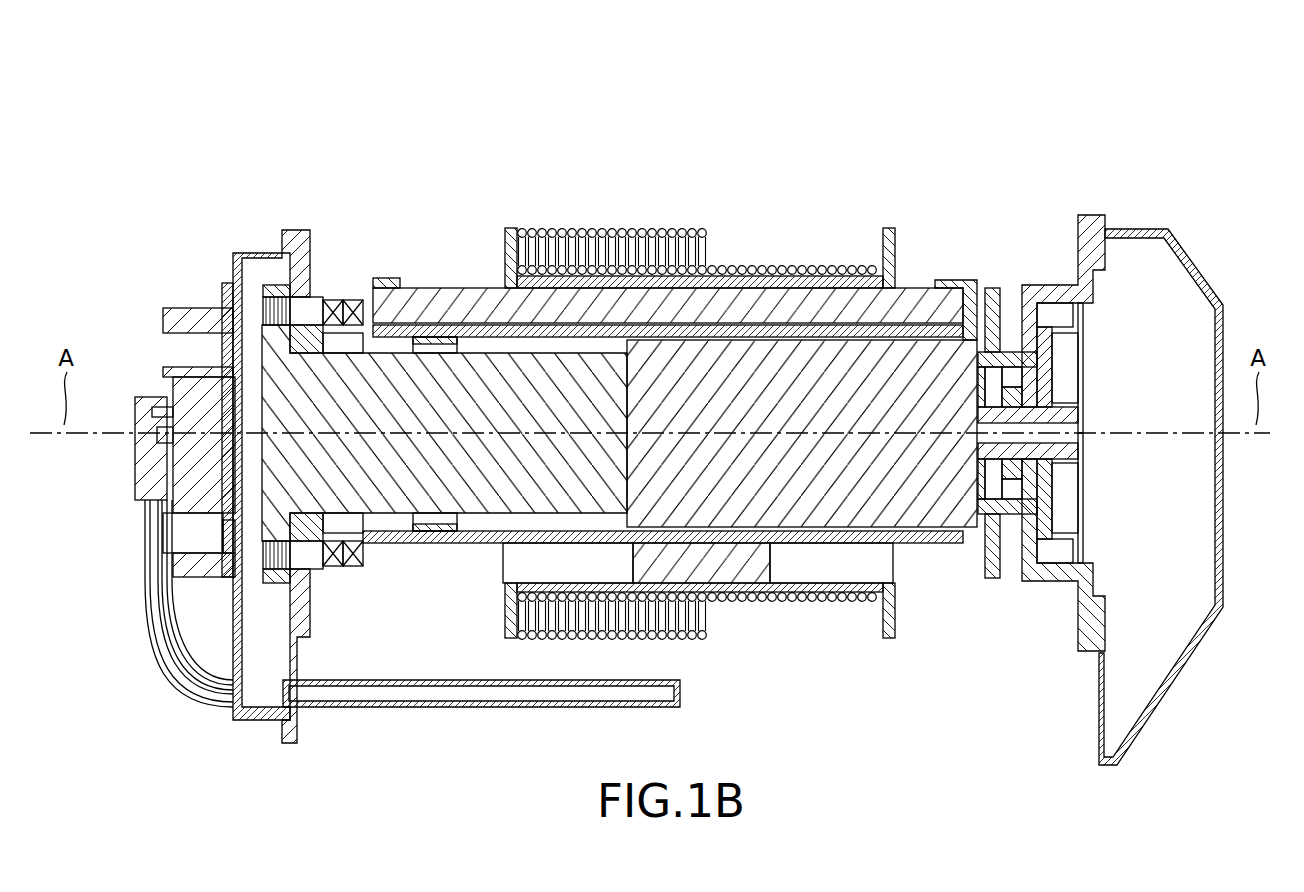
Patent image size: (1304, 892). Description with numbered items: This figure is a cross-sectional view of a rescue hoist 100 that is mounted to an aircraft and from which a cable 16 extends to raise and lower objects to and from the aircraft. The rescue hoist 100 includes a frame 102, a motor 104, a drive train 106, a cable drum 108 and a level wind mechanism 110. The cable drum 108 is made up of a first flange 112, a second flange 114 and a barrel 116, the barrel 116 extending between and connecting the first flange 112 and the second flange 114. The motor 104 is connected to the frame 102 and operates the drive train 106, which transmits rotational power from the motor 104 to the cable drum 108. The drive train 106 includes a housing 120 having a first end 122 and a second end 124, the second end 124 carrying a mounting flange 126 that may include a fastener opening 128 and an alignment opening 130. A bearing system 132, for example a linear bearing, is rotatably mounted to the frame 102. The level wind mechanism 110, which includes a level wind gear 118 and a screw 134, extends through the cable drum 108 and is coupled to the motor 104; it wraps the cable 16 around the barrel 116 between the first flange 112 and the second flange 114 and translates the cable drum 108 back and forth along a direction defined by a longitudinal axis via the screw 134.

The rescue hoist 100 is at (325, 131).
The frame 102 is at (297, 232).
The motor 104 is at (958, 507).
The drive train 106 is at (488, 535).
The cable drum 108 is at (878, 563).
The level wind mechanism 110 is at (925, 265).
The first flange 112 is at (505, 248).
The second flange 114 is at (893, 230).
The barrel 116 is at (780, 266).
The level wind gear 118 is at (1005, 290).
The housing 120 is at (258, 342).
The first end 122 is at (598, 535).
The second end 124 is at (273, 497).
The mounting flange 126 is at (271, 296).
The fastener opening 128 is at (302, 300).
The alignment opening 130 is at (295, 545).
The bearing system 132 is at (383, 520).
The screw 134 is at (993, 303).
The cable 16 is at (700, 228).